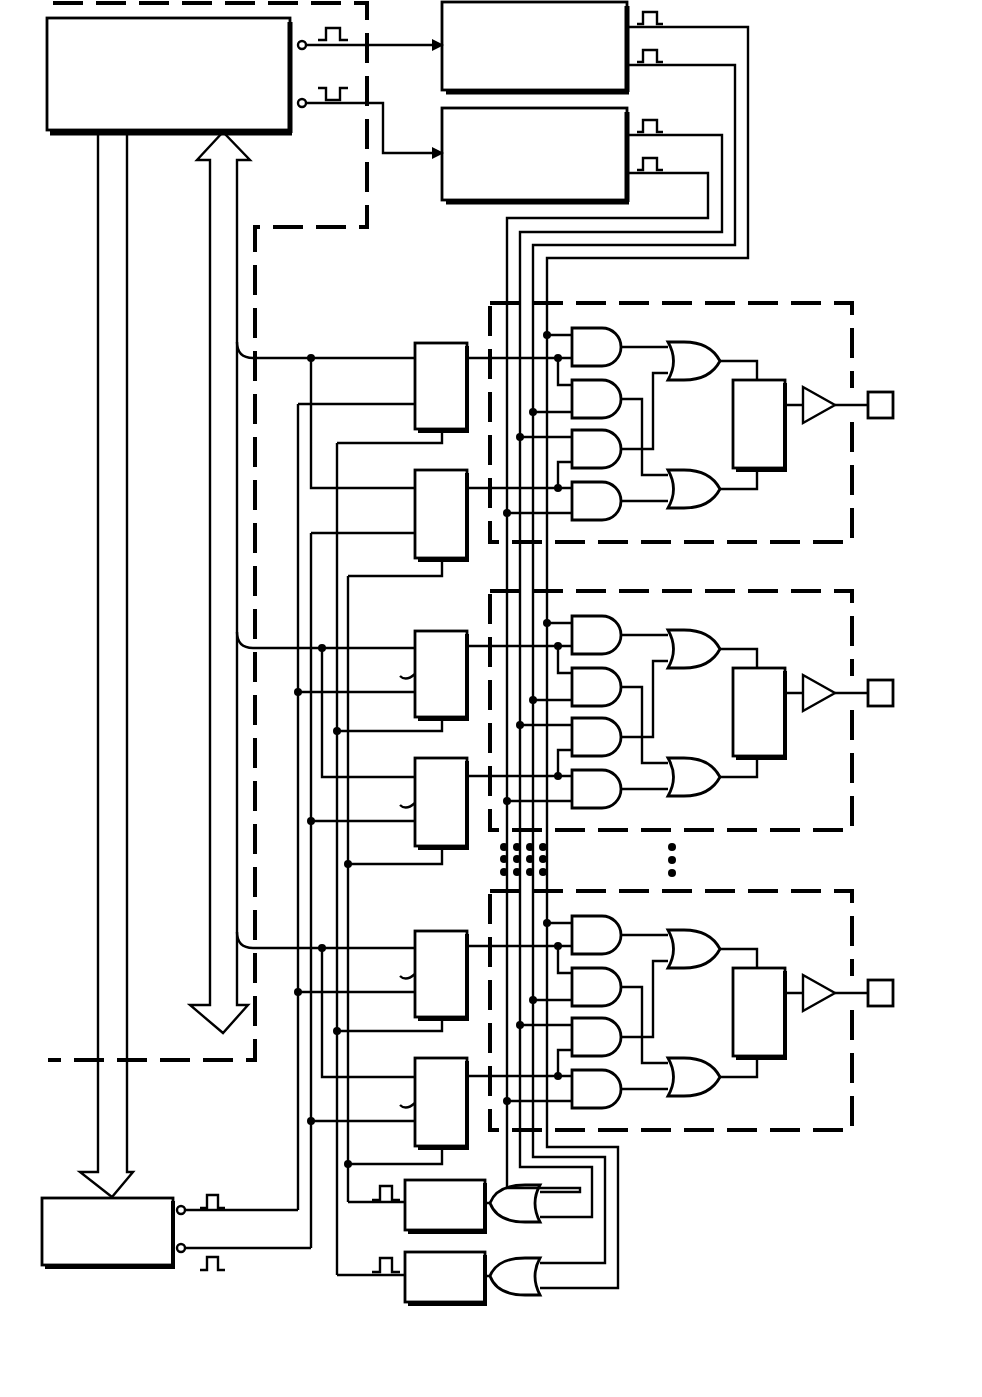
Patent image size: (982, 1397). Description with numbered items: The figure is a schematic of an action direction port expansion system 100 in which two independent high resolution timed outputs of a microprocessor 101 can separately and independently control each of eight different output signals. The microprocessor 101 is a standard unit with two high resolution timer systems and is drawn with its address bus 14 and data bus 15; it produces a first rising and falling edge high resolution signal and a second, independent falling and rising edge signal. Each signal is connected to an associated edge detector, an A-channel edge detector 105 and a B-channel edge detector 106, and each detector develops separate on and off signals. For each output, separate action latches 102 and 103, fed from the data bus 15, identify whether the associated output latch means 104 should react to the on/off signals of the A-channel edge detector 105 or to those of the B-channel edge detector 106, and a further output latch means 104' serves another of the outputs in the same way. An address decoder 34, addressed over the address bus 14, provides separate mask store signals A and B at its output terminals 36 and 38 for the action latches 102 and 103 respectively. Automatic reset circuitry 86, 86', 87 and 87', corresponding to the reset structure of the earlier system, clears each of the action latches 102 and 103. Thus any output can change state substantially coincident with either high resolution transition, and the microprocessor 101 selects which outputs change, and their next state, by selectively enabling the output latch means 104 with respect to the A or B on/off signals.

The address bus 14 is at (127, 735).
The data bus 15 is at (207, 840).
The address decoder 34 is at (105, 1267).
The output terminal of address decoder 36 is at (180, 1205).
The output terminal of address decoder 38 is at (180, 1253).
The reset circuitry 86 is at (494, 1185).
The reset circuitry 86' is at (538, 1261).
The reset circuitry 87 is at (419, 1208).
The reset circuitry 87' is at (413, 1280).
The action direction port expansion system 100 is at (757, 1199).
The microprocessor 101 is at (255, 272).
The action latch 102 is at (415, 386).
The action latch 103 is at (415, 509).
The output latch means 104 is at (680, 407).
The output logic block 104' is at (680, 692).
The A-channel edge detector 105 is at (442, 70).
The B-channel edge detector 106 is at (442, 184).